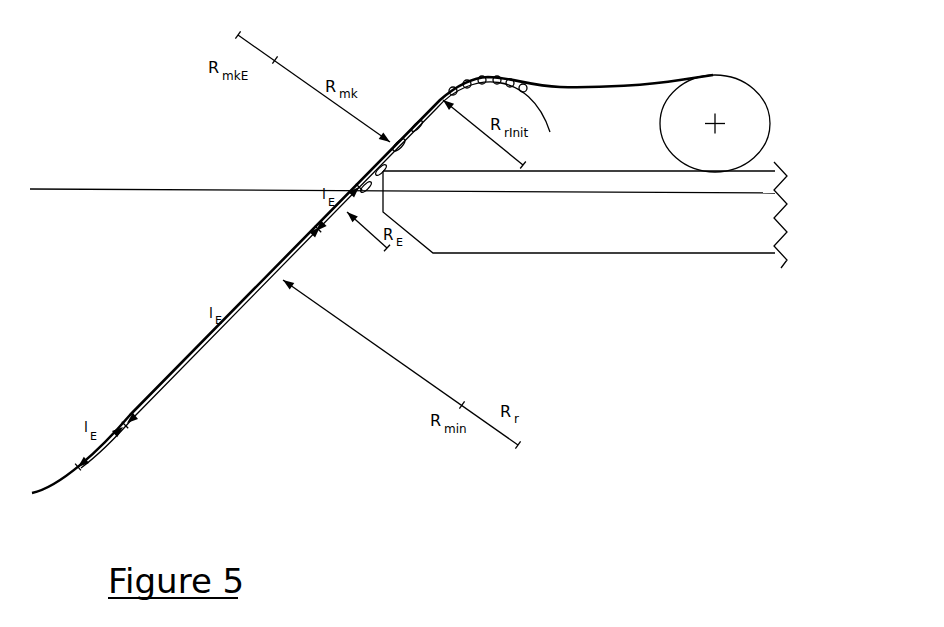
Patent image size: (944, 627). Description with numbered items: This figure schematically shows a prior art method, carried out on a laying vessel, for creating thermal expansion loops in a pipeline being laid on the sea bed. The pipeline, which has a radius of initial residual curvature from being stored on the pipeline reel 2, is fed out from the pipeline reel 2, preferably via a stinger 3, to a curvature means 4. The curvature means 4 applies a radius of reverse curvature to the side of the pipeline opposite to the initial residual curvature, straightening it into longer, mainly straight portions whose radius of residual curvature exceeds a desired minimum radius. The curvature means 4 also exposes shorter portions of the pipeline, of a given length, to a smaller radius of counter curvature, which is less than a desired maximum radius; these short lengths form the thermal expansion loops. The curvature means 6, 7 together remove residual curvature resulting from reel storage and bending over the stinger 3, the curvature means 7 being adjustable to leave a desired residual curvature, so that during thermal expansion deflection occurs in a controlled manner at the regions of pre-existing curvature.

The pipeline reel 2 is at (730, 75).
The stinger 3 is at (473, 89).
The curvature means 4 is at (392, 115).
The curvature means 6 is at (414, 129).
The curvature means 7 is at (392, 151).